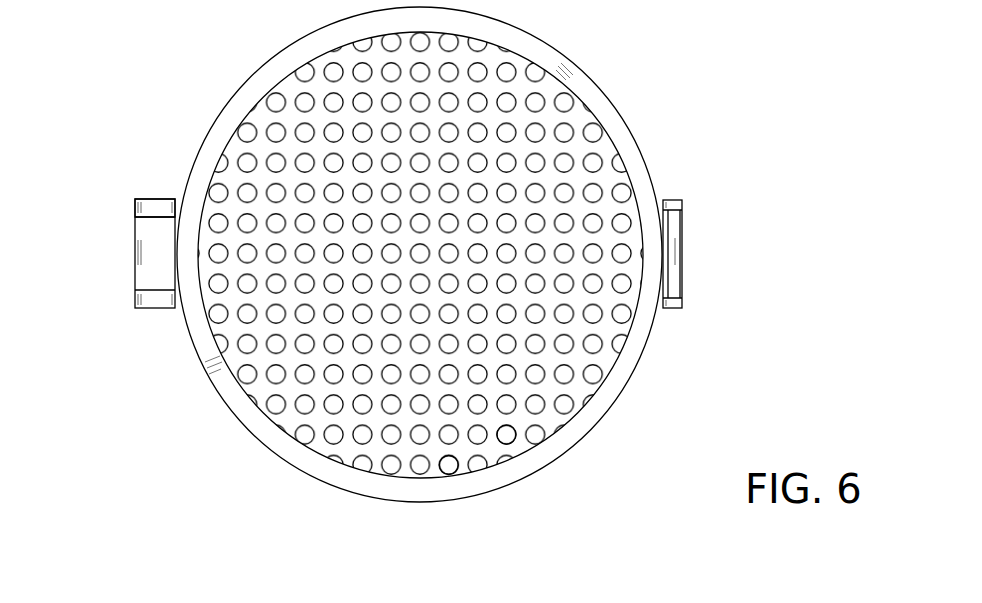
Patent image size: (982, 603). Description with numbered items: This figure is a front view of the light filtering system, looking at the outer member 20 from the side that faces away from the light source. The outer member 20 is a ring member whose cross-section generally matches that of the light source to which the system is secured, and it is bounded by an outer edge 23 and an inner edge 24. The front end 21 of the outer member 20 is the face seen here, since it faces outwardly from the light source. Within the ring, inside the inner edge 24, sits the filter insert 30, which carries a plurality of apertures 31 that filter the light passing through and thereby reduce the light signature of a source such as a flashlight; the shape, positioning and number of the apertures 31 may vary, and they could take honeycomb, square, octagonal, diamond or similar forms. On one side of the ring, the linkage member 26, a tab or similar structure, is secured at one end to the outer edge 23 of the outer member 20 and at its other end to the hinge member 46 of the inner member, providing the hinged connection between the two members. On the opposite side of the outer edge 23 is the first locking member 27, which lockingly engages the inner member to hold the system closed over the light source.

The outer member 20 is at (625, 118).
The front end 21 is at (260, 427).
The outer edge 23 is at (597, 422).
The inner edge 24 is at (262, 113).
The linkage member 26 is at (155, 280).
The first locking member 27 is at (667, 308).
The filter insert 30 is at (442, 450).
The apertures 31 is at (505, 435).
The hinge member 46 is at (153, 199).